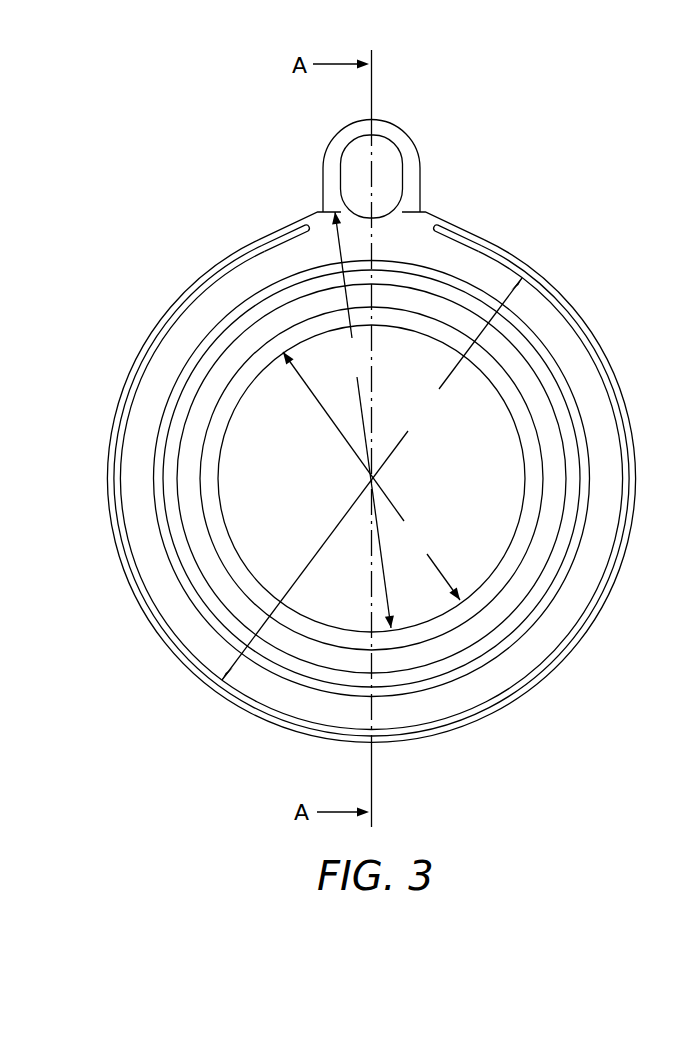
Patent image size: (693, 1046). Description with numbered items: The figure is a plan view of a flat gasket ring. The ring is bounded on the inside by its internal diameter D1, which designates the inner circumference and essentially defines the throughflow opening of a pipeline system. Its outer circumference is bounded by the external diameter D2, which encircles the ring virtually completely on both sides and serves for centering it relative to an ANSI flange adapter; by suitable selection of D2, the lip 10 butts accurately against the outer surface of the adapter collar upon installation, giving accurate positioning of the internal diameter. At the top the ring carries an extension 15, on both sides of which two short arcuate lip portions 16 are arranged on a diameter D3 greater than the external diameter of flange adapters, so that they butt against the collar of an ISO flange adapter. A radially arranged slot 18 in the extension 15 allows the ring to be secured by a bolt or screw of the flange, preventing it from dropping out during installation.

The lip 10 is at (508, 262).
The extension 15 is at (387, 131).
The arcuate lip portions 16 is at (316, 212).
The slot 18 is at (380, 177).
The internal diameter D1 is at (371, 476).
The external diameter D2 is at (372, 479).
The diameter of the lip structure D3 is at (363, 420).